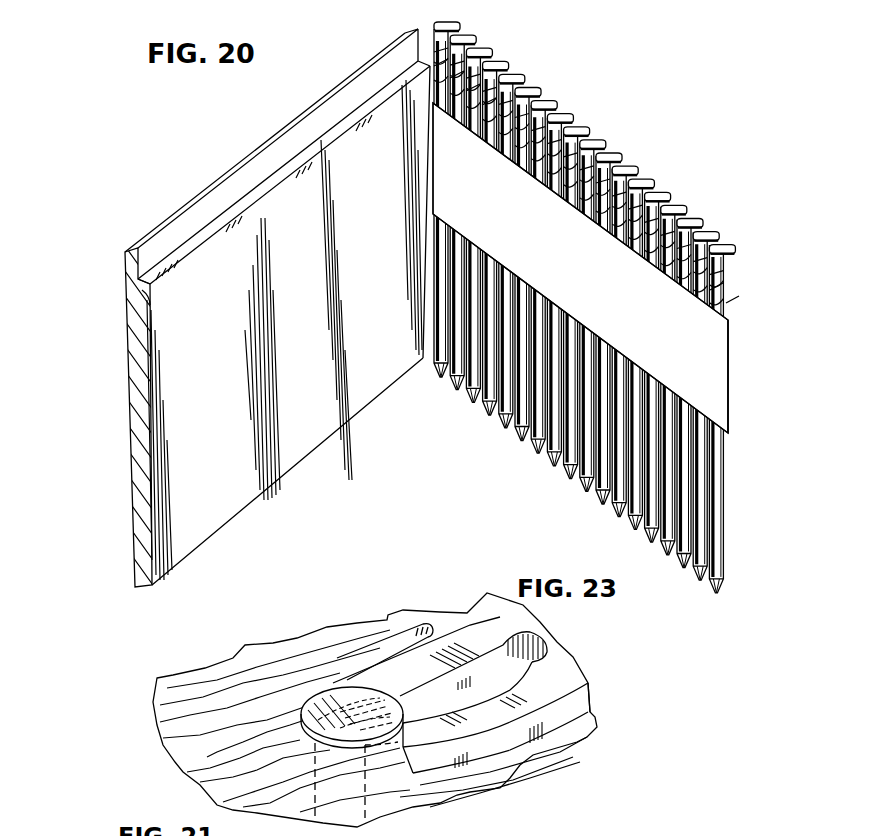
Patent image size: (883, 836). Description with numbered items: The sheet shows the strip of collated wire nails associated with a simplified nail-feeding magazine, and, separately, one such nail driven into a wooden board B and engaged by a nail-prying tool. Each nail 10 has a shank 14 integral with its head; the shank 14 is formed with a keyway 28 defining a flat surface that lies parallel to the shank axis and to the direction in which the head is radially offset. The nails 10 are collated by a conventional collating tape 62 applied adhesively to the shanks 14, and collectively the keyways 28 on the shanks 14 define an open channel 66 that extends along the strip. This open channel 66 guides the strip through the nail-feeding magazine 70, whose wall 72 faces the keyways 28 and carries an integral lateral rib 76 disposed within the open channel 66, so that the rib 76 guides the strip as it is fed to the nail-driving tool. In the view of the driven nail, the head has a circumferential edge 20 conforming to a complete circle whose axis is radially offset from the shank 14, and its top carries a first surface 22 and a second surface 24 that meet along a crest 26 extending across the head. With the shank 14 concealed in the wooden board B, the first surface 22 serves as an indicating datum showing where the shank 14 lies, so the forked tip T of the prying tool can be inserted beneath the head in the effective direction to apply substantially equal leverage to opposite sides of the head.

In FIG. 20, the nail 10 is at (735, 221).
In FIG. 20, the keyway 28 is at (483, 117).
In FIG. 20, the collating tape 62 is at (705, 355).
In FIG. 20, the open channel 66 is at (736, 311).
In FIG. 20, the nail-feeding magazine 70 is at (338, 77).
In FIG. 20, the wall 72 is at (133, 370).
In FIG. 20, the lateral rib 76 is at (145, 326).
In FIG. 23, the circumferential edge 20 is at (562, 660).
In FIG. 23, the first surface 22 is at (200, 782).
In FIG. 23, the second surface 24 is at (335, 701).
In FIG. 23, the crest 26 is at (300, 710).
In FIG. 23, the shank 14 is at (427, 818).
In FIG. 23, the wooden board B is at (215, 683).
In FIG. 23, the forked tip T is at (437, 670).